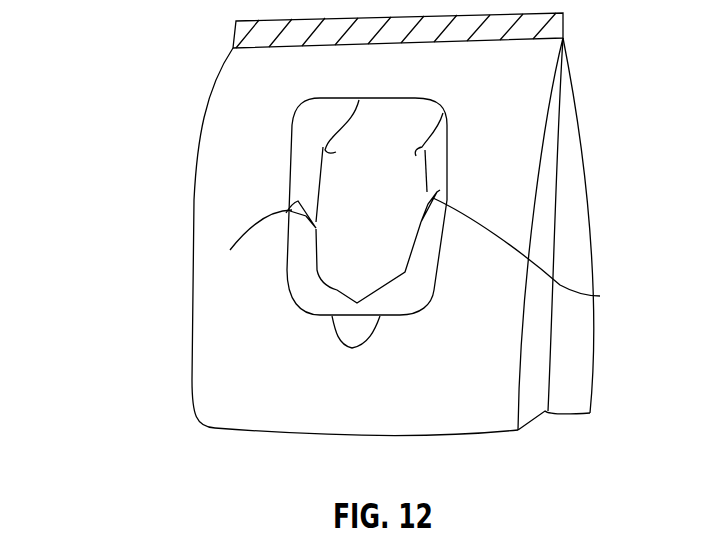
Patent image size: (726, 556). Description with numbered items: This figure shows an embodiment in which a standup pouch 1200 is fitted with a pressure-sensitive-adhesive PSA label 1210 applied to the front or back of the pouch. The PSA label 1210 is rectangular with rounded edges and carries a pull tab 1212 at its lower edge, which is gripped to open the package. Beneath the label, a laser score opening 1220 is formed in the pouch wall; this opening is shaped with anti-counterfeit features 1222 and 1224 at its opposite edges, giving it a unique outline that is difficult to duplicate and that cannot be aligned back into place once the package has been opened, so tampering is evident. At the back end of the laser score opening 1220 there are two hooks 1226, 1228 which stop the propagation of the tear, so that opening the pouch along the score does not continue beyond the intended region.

The standup pouch 1200 is at (205, 310).
The PSA label 1210 is at (327, 113).
The pull tab 1212 is at (355, 337).
The laser score opening 1220 is at (410, 271).
The anti-counterfeit feature 1222 is at (230, 250).
The anti-counterfeit feature 1224 is at (600, 296).
The hook 1226 is at (359, 100).
The hook 1228 is at (443, 113).